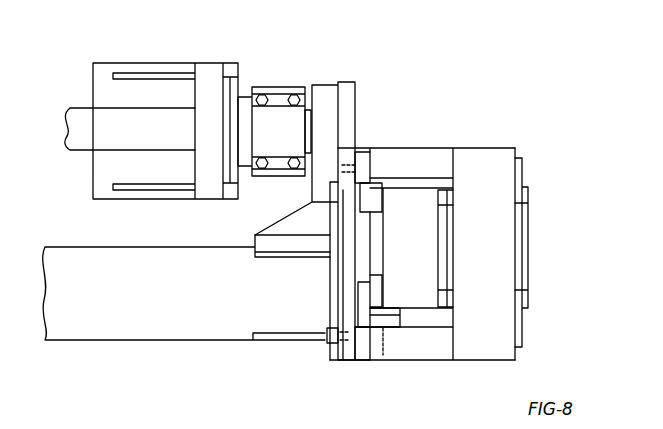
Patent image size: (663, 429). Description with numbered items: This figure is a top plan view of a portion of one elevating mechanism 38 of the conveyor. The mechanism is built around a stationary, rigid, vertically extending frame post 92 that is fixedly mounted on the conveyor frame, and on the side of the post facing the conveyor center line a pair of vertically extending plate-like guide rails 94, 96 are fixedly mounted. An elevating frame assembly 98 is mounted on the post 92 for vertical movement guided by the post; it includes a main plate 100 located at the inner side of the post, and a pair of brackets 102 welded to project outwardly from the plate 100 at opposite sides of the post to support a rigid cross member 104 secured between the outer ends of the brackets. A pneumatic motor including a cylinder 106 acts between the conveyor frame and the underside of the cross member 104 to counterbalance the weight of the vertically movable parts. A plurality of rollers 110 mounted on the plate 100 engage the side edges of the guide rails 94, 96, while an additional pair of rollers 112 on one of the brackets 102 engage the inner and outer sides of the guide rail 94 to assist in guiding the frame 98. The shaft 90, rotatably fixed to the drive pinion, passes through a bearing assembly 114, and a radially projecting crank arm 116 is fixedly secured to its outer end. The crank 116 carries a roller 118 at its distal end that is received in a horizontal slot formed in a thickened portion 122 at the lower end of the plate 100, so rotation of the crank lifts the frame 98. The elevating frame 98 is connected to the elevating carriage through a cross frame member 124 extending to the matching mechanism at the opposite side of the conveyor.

The elevating mechanism 38 is at (474, 68).
The shaft 90 is at (80, 118).
The frame post 92 is at (418, 242).
The guide rail 94 is at (370, 292).
The guide rail 96 is at (378, 200).
The elevating frame assembly 98 is at (428, 352).
The main plate 100 is at (357, 156).
The brackets 102 is at (435, 157).
The cross member 104 is at (505, 247).
The cylinder 106 is at (523, 237).
The rollers 110 is at (378, 160).
The rollers 112 is at (395, 320).
The bearing assembly 114 is at (190, 63).
The crank arm 116 is at (272, 118).
The roller 118 is at (308, 112).
The thickened portion 122 is at (325, 95).
The cross frame member 124 is at (135, 328).